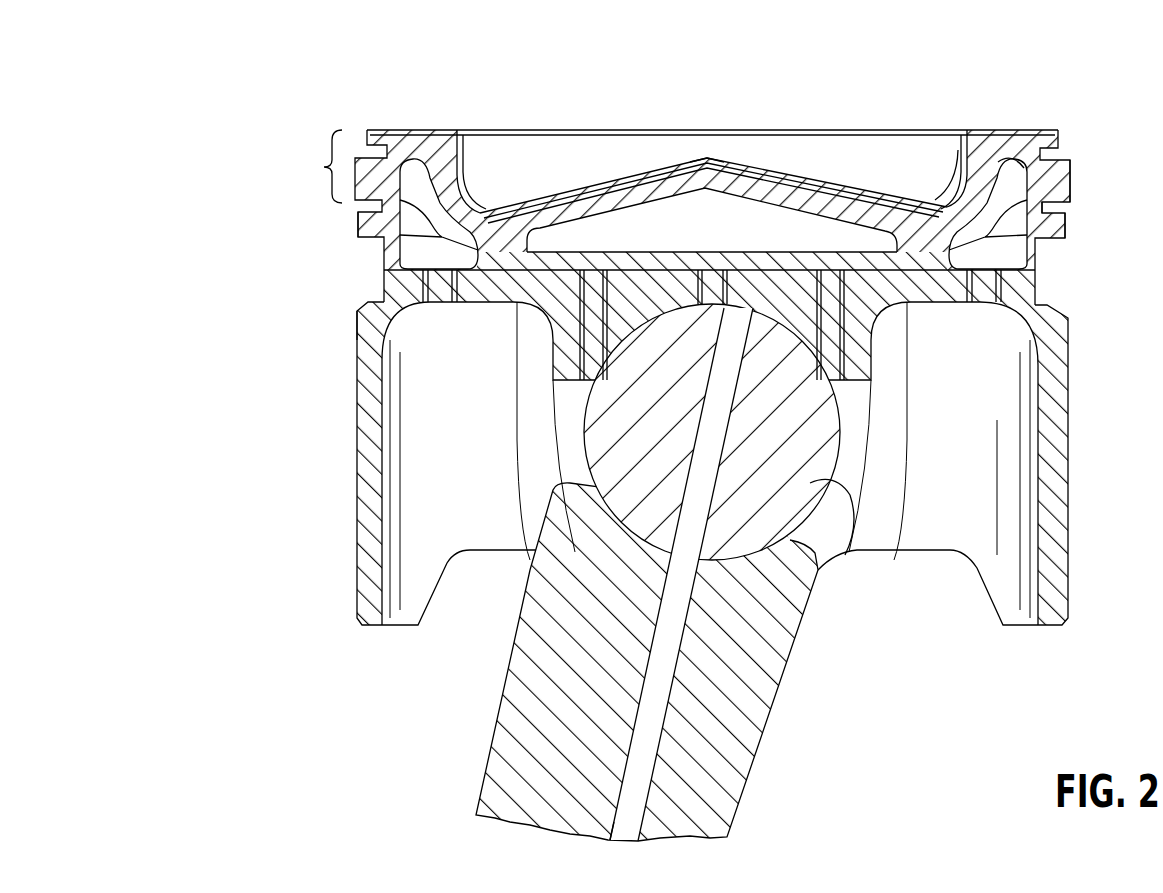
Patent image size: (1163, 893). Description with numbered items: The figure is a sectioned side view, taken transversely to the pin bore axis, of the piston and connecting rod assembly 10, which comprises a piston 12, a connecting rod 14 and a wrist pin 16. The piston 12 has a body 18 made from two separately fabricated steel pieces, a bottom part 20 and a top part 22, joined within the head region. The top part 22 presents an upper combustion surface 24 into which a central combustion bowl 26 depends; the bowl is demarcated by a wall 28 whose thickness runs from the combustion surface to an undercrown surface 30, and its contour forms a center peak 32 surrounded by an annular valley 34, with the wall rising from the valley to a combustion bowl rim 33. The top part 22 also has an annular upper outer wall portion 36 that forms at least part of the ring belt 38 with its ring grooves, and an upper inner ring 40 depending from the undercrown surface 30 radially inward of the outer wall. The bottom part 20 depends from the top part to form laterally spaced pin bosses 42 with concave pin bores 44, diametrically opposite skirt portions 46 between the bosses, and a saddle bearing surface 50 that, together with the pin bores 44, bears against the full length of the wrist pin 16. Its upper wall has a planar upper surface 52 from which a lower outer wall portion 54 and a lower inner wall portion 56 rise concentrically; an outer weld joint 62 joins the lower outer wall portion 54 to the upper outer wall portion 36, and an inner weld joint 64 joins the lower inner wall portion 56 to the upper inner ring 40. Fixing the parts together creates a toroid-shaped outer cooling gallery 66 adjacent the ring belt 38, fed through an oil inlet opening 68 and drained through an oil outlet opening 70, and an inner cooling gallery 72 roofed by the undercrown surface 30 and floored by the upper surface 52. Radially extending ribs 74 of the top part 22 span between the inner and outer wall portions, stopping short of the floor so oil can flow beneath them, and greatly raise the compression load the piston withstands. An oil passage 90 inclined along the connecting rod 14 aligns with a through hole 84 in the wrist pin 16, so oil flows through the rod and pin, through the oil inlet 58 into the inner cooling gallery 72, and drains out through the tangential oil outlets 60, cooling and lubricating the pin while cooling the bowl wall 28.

The piston and connecting rod assembly 10 is at (216, 131).
The piston 12 is at (1063, 124).
The connecting rod 14 is at (802, 666).
The wrist pin 16 is at (790, 292).
The body 18 is at (1074, 160).
The bottom part 20 is at (348, 311).
The top part 22 is at (359, 129).
The upper combustion surface 24 is at (441, 126).
The combustion bowl 26 is at (580, 150).
The combustion bowl wall 28 is at (478, 182).
The undercrown surface 30 is at (600, 192).
The center peak 32 is at (708, 156).
The combustion bowl rim 33 is at (963, 133).
The annular valley 34 is at (935, 196).
The upper outer wall portion 36 is at (1072, 196).
The ring belt 38 is at (319, 166).
The upper inner ring 40 is at (470, 216).
The pin bosses 42 is at (830, 522).
The pin bores 44 is at (822, 477).
The skirt portions 46 is at (357, 546).
The saddle bearing surface 50 is at (585, 398).
The upper surface 52 is at (748, 268).
The lower outer wall portion 54 is at (388, 252).
The lower inner wall portion 56 is at (922, 291).
The oil inlet 58 is at (712, 270).
The oil outlets 60 is at (592, 338).
The outer weld joint 62 is at (1070, 222).
The inner weld joint 64 is at (512, 216).
The outer cooling gallery 66 is at (1001, 142).
The oil inlet opening 68 is at (972, 320).
The oil outlet opening 70 is at (440, 292).
The inner cooling gallery 72 is at (651, 165).
The ribs 74 is at (395, 230).
The through hole 84 is at (695, 492).
The oil passage 90 is at (615, 820).